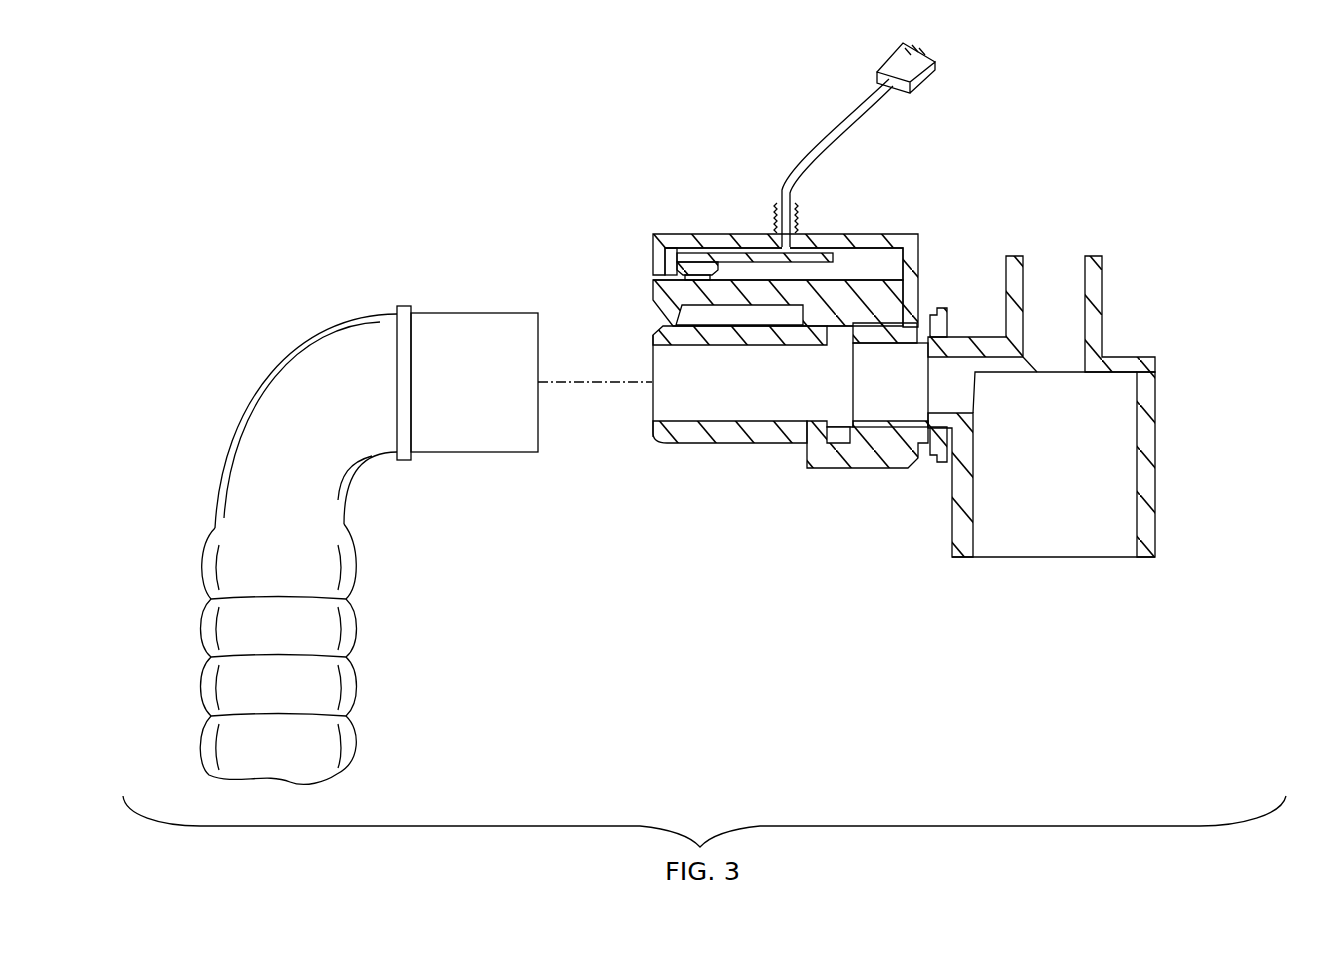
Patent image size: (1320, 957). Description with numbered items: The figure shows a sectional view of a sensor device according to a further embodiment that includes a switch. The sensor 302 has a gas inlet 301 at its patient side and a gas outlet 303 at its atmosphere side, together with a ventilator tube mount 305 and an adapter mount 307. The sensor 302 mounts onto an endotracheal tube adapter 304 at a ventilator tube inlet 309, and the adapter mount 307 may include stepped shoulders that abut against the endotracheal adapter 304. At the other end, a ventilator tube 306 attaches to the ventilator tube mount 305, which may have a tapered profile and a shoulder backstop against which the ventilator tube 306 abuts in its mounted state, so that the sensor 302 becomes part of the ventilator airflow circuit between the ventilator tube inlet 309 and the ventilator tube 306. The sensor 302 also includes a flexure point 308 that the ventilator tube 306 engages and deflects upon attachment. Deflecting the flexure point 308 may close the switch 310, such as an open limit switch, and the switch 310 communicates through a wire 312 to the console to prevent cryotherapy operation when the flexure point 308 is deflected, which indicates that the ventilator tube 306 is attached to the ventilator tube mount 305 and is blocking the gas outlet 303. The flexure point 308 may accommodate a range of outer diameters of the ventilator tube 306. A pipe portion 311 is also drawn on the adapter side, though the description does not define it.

The gas inlet 301 is at (850, 395).
The sensor 302 is at (883, 233).
The gas outlet 303 is at (650, 403).
The endotracheal tube adapter 304 is at (1158, 472).
The ventilator tube mount 305 is at (723, 442).
The ventilator tube 306 is at (224, 452).
The adapter mount 307 is at (900, 467).
The flexure point 308 is at (652, 302).
The ventilator tube inlet 309 is at (920, 327).
The switch 310 is at (667, 262).
The pipe 311 is at (1103, 270).
The wire 312 is at (817, 145).